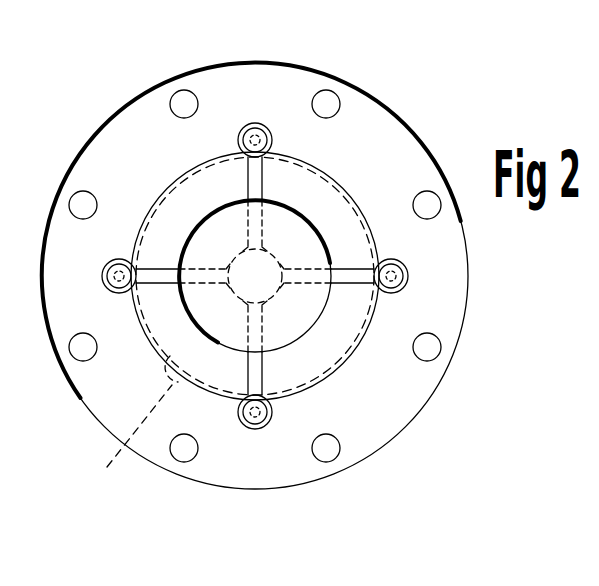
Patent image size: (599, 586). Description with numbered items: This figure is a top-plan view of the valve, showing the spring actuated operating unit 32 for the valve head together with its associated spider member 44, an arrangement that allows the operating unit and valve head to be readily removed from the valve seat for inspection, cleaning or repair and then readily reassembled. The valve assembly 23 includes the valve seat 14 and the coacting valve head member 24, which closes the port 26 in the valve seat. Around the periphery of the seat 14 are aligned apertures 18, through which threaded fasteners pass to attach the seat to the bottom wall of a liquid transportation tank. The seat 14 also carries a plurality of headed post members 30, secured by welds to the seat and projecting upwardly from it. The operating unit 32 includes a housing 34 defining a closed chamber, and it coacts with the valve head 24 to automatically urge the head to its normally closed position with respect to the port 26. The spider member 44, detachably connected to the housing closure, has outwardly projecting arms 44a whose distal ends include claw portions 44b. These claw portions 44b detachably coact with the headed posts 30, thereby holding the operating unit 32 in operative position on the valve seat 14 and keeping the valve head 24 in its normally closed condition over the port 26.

The valve seat 14 is at (374, 94).
The aligned apertures 18 is at (189, 92).
The valve assembly 23 is at (430, 104).
The valve head member 24 is at (160, 195).
The port 26 is at (130, 421).
The headed post members 30 is at (273, 144).
The spring actuated operating unit 32 is at (320, 236).
The housing 34 is at (222, 338).
The spider member 44 is at (334, 294).
The outwardly projecting arms 44a is at (263, 190).
The claw portions 44b is at (259, 124).